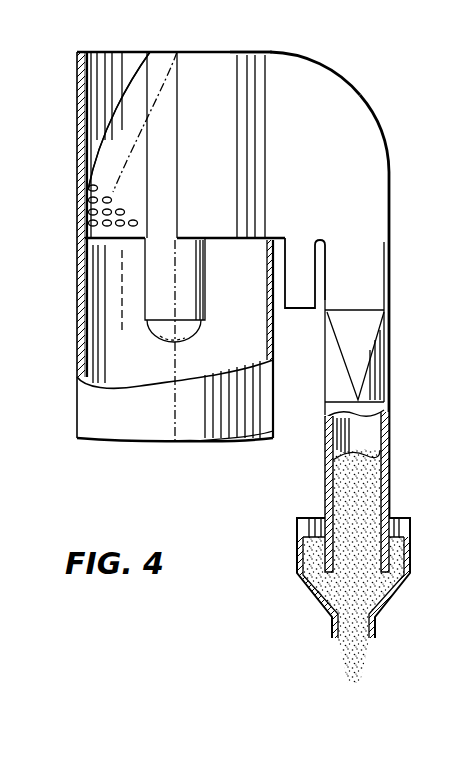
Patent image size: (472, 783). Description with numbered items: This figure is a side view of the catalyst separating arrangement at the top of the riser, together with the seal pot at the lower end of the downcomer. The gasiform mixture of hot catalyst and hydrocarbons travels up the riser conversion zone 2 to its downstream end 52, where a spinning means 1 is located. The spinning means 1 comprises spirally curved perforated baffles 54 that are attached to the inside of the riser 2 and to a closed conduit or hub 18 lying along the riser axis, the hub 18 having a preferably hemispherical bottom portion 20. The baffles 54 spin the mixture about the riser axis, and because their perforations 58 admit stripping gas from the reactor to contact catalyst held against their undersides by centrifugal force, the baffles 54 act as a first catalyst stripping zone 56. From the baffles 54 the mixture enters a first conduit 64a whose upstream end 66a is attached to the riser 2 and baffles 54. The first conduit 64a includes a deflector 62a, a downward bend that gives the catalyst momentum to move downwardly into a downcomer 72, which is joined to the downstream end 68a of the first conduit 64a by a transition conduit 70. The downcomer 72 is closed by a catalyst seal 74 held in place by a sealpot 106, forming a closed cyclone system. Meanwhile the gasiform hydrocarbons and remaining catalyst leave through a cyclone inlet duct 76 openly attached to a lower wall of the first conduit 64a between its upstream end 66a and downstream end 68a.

The spinning means 1 is at (104, 131).
The riser conversion zone 2 is at (77, 289).
The closed conduit (hub) 18 is at (158, 288).
The hemispherical bottom portion 20 is at (167, 343).
The downstream end 52 is at (77, 116).
The perforated baffles 54 is at (130, 68).
The first catalyst stripping zone 56 is at (114, 96).
The perforations 58 is at (88, 182).
The deflector 62a is at (384, 133).
The first conduit 64a is at (315, 63).
The upstream end 66a is at (273, 52).
The downstream end 68a is at (392, 220).
The transition conduit 70 is at (392, 370).
The downcomer 72 is at (421, 477).
The catalyst seal 74 is at (342, 483).
The cyclone inlet duct 76 is at (297, 262).
The sealpot 106 is at (388, 595).